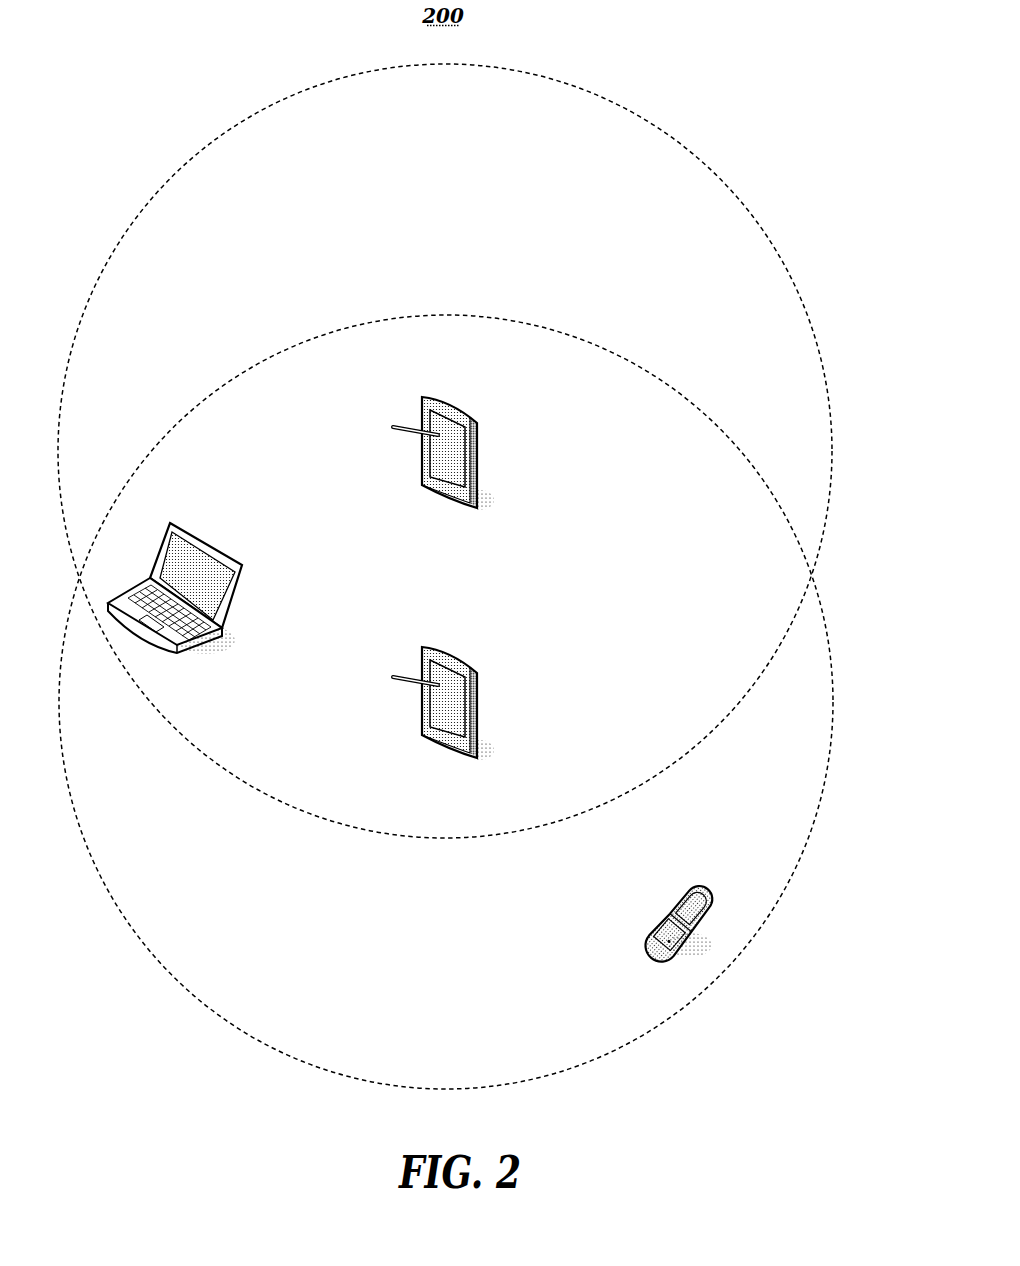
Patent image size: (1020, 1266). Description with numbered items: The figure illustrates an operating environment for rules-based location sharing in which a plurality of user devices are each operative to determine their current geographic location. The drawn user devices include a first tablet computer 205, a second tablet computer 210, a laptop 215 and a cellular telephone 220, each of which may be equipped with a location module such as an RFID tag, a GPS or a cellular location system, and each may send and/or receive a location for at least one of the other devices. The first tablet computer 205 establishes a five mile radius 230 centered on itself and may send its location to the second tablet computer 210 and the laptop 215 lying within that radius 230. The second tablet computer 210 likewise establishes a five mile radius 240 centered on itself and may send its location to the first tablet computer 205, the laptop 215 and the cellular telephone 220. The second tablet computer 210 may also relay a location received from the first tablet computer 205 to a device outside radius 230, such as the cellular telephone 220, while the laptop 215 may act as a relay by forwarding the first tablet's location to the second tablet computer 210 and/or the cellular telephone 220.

The first tablet computer 205 is at (480, 442).
The second tablet computer 210 is at (476, 703).
The laptop 215 is at (242, 577).
The cellular telephone 220 is at (717, 885).
The radius 230 is at (712, 168).
The radius 240 is at (827, 638).